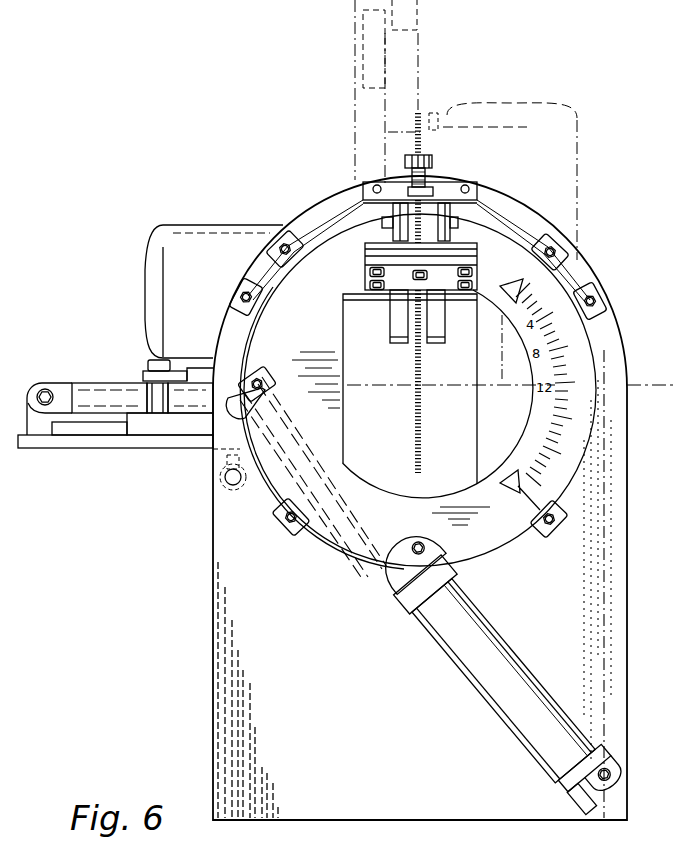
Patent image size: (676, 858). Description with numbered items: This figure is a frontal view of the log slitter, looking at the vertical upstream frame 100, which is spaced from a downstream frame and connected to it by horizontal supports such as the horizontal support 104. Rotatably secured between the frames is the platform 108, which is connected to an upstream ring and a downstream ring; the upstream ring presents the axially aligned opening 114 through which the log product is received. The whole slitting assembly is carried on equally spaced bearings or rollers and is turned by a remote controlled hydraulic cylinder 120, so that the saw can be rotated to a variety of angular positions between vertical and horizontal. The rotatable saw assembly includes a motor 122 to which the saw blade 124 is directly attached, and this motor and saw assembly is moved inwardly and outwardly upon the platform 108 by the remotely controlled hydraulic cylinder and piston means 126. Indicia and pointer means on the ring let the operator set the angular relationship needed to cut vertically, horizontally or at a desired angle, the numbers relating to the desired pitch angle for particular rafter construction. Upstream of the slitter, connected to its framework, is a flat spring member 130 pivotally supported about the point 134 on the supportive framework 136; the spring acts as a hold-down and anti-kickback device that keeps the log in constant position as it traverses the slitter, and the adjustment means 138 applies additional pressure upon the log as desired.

The vertical upstream frame 100 is at (226, 704).
The horizontal support 104 is at (228, 493).
The platform 108 is at (64, 448).
The opening 114 is at (368, 489).
The hydraulic cylinder 120 is at (510, 660).
The motor 122 is at (198, 240).
The saw blade 124 is at (422, 455).
The hydraulic cylinder and piston means 126 is at (98, 383).
The flat spring member 130 is at (398, 345).
The pivot point 134 is at (457, 222).
The supportive framework 136 is at (390, 183).
The adjustment means 138 is at (433, 161).